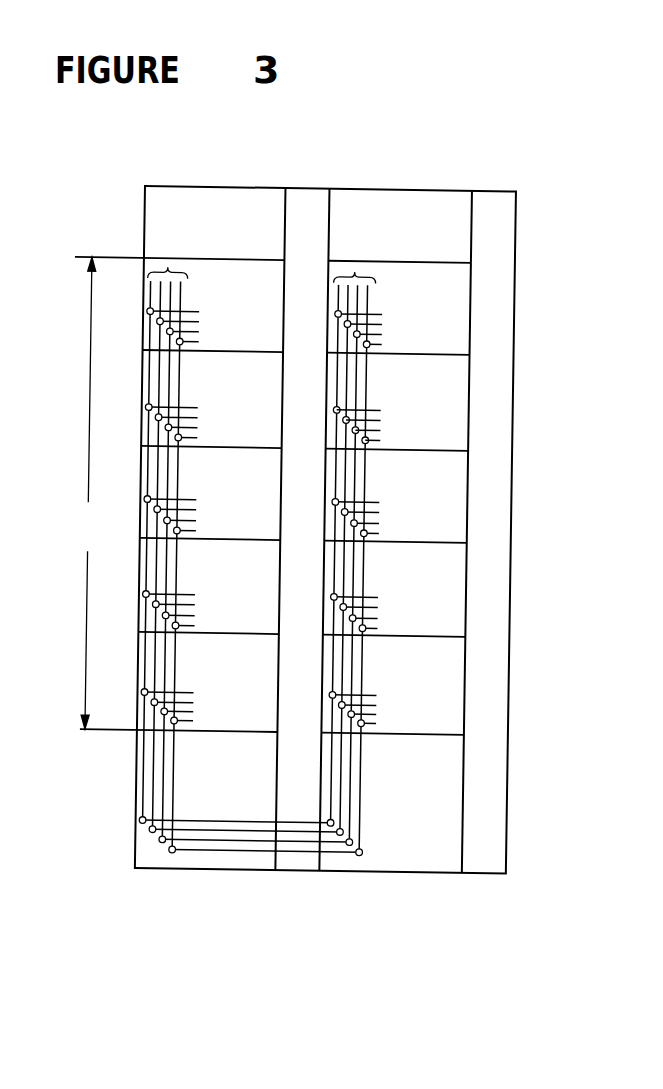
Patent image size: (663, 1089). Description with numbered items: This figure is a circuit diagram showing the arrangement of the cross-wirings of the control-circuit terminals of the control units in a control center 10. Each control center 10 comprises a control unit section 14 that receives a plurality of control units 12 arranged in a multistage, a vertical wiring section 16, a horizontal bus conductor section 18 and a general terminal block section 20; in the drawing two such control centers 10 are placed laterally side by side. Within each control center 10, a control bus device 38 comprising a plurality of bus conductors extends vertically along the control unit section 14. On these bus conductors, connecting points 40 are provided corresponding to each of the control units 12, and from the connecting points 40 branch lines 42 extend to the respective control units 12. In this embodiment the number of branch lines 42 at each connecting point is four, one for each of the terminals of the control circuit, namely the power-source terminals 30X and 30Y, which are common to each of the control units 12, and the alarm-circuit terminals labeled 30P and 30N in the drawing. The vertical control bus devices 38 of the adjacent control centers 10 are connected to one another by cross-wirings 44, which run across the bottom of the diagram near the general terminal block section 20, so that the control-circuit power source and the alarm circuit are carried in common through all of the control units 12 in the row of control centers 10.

The control center 10 is at (229, 938).
The control unit 12 is at (439, 423).
The control unit section 14 is at (105, 541).
The vertical wiring section 16 is at (319, 333).
The horizontal bus conductor section 18 is at (242, 241).
The general terminal block section 20 is at (248, 793).
The terminal 30X is at (204, 406).
The terminal 30Y is at (204, 416).
The third control line 30P is at (204, 426).
The fourth control line 30N is at (204, 436).
The control bus device 38 is at (173, 266).
The connecting point 40 is at (153, 408).
The branch line 42 is at (216, 395).
The cross-wiring 44 is at (247, 849).